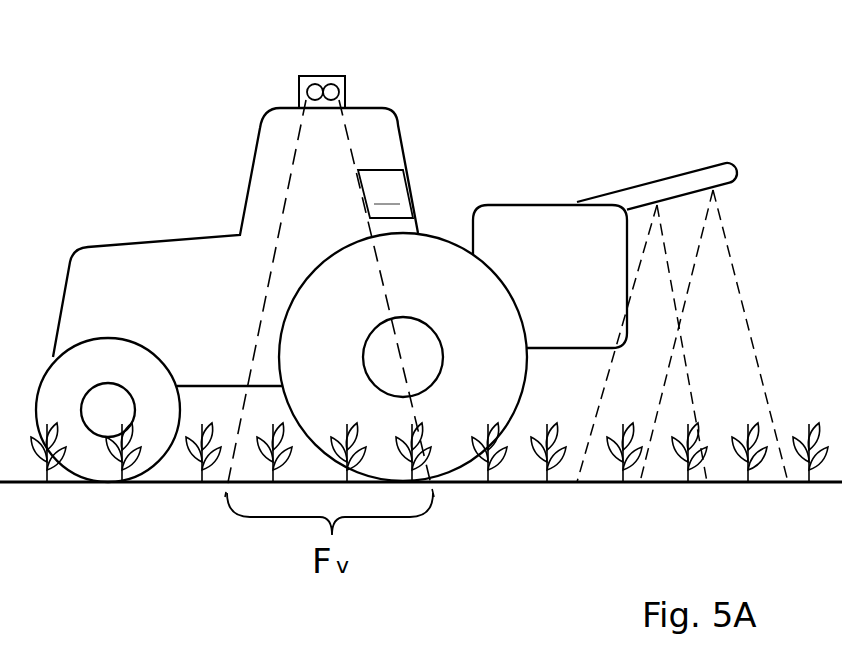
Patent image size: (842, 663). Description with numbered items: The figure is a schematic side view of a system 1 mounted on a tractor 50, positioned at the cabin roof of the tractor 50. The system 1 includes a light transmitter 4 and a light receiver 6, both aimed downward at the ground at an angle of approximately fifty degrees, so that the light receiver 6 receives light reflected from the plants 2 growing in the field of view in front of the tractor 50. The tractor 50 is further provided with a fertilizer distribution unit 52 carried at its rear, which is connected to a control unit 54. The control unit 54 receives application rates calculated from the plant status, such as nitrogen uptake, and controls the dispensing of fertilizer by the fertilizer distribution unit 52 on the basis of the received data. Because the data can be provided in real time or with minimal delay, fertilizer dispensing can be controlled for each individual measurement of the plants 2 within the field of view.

The system 1 is at (329, 248).
The plant 2 is at (201, 483).
The light transmitter 4 is at (300, 80).
The light receiver 6 is at (345, 80).
The tractor 50 is at (398, 128).
The fertilizer distribution unit 52 is at (527, 204).
The control unit 54 is at (385, 194).